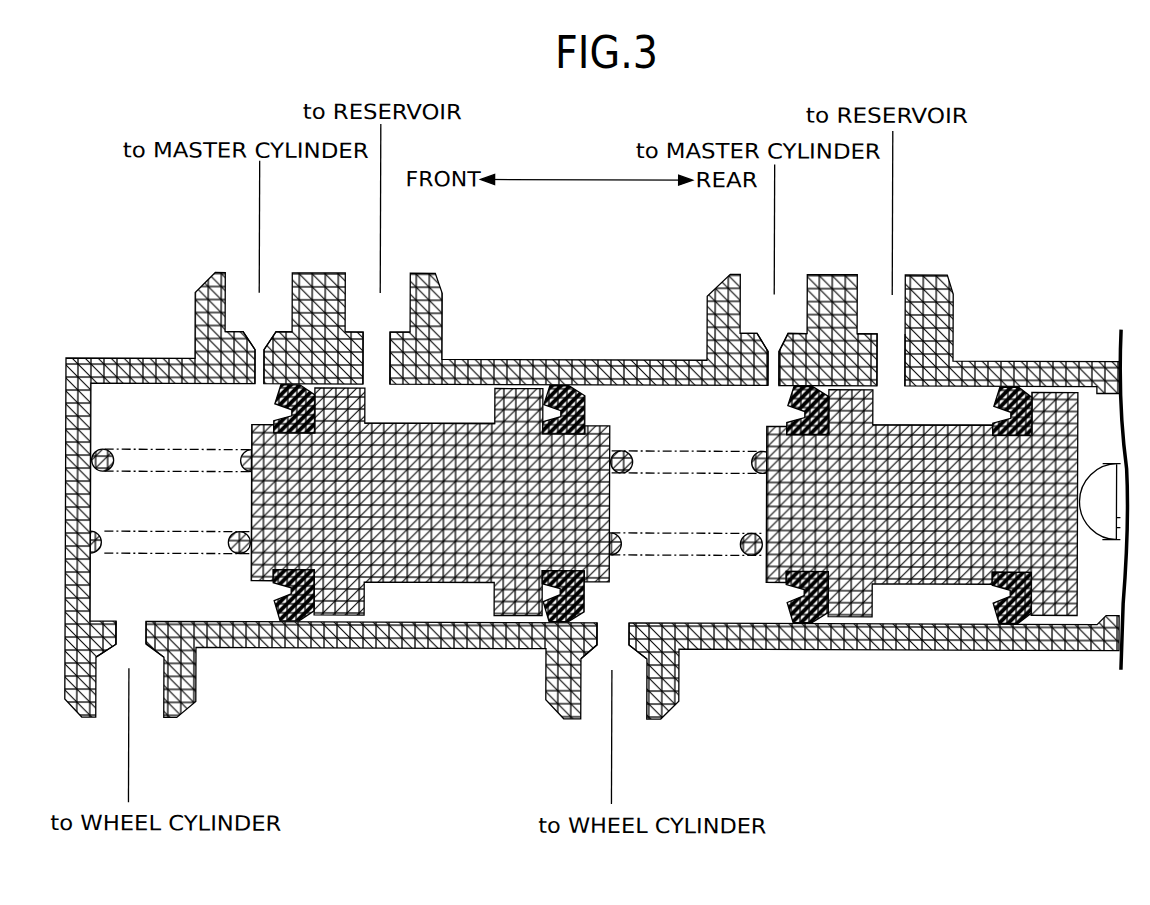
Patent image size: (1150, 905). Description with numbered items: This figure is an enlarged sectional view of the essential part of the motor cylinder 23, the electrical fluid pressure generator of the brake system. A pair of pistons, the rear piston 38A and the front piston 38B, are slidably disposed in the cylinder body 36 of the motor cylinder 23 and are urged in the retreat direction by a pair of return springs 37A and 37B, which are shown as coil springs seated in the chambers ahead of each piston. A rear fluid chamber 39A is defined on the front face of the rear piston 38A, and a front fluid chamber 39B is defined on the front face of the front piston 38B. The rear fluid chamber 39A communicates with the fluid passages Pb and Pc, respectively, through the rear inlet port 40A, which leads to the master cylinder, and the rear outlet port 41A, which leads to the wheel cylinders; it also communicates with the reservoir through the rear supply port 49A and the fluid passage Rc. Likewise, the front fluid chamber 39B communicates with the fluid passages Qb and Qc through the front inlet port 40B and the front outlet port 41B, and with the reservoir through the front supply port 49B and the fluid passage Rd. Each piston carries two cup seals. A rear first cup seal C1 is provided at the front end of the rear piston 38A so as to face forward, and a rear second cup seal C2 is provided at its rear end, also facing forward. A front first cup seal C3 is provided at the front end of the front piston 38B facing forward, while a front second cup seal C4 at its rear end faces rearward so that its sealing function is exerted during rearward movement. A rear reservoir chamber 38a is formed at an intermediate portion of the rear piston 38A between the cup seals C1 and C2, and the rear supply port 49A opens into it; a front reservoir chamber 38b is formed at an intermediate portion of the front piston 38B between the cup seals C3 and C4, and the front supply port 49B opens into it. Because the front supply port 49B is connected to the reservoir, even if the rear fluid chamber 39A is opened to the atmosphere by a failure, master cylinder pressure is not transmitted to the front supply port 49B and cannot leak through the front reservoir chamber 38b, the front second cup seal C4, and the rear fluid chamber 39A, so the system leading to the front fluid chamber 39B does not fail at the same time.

The motor cylinder 23 is at (552, 307).
The cylinder body 36 is at (570, 358).
The return spring 37A is at (626, 451).
The return spring 37B is at (103, 447).
The rear piston 38A is at (939, 519).
The front piston 38B is at (451, 519).
The rear reservoir chamber 38a is at (959, 414).
The front reservoir chamber 38b is at (453, 415).
The rear fluid chamber 39A is at (713, 515).
The front fluid chamber 39B is at (189, 515).
The rear inlet port 40A is at (771, 343).
The front inlet port 40B is at (257, 342).
The rear outlet port 41A is at (612, 633).
The front outlet port 41B is at (132, 632).
The rear supply port 49A is at (888, 350).
The front supply port 49B is at (377, 347).
The rear first cup seal C1 is at (804, 626).
The rear second cup seal C2 is at (1016, 612).
The front first cup seal C3 is at (302, 605).
The front second cup seal C4 is at (552, 615).
The fluid passage Qb is at (259, 251).
The fluid passage Rd is at (417, 225).
The fluid passage Pb is at (774, 232).
The fluid passage Rc is at (892, 232).
The fluid passage Qc is at (133, 727).
The fluid passage Pc is at (615, 728).